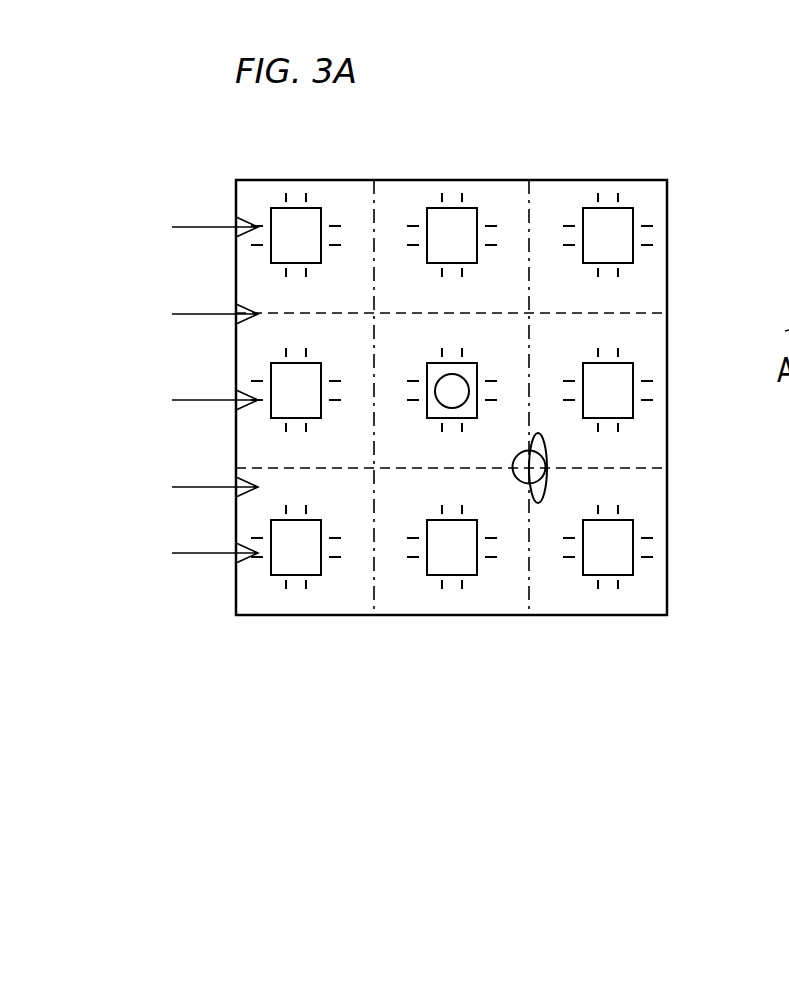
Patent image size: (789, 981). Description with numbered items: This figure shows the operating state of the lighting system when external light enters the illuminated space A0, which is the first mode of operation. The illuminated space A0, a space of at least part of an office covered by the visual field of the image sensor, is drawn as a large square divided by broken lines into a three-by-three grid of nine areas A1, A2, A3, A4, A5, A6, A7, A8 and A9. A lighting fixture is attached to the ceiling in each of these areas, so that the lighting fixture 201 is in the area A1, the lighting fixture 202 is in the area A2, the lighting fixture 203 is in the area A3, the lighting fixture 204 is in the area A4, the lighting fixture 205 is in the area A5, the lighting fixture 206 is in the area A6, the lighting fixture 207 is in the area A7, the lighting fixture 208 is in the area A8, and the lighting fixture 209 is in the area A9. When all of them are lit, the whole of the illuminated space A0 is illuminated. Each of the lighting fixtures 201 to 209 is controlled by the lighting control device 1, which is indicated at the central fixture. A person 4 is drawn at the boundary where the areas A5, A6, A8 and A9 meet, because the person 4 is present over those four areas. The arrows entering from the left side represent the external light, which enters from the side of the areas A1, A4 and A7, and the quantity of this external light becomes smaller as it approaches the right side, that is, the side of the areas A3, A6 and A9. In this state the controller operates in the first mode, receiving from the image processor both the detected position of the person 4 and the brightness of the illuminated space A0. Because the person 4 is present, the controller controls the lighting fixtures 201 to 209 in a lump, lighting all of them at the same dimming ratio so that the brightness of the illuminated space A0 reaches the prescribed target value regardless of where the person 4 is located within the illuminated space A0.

The illuminated space A0 is at (668, 323).
The area A1 is at (255, 194).
The area A2 is at (399, 197).
The area A3 is at (563, 197).
The area A4 is at (253, 353).
The area A5 is at (385, 342).
The area A6 is at (652, 347).
The area A7 is at (259, 598).
The area A8 is at (413, 598).
The area A9 is at (642, 603).
The lighting fixture 201 is at (299, 252).
The lighting fixture 202 is at (459, 250).
The lighting fixture 203 is at (618, 250).
The lighting fixture 204 is at (303, 405).
The lighting fixture 205 is at (465, 412).
The lighting fixture 206 is at (616, 405).
The lighting fixture 207 is at (297, 568).
The lighting fixture 208 is at (468, 569).
The lighting fixture 209 is at (593, 567).
The lighting control device 1 is at (453, 385).
The person 4 is at (538, 463).